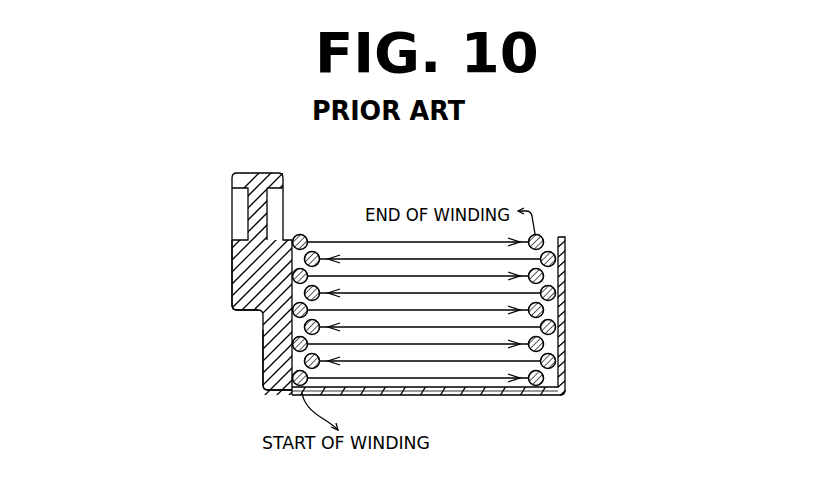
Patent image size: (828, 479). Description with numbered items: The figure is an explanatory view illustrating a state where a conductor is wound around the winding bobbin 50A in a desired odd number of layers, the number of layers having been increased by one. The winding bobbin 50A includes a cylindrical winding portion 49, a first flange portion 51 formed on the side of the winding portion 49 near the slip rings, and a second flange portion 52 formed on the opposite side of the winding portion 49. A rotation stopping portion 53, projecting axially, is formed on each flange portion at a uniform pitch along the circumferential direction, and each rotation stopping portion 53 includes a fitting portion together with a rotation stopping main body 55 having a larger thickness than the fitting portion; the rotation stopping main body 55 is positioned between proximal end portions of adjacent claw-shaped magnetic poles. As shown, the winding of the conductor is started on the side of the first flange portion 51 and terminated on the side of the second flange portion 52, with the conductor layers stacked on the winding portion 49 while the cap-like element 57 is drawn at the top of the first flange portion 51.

The winding portion 49 is at (508, 395).
The winding bobbin 50A is at (458, 398).
The first flange portion 51 is at (268, 376).
The second flange portion 52 is at (565, 315).
The rotation stopping portion 53 is at (240, 290).
The rotation stopping main body 55 is at (242, 268).
The terminal block 57 is at (254, 180).